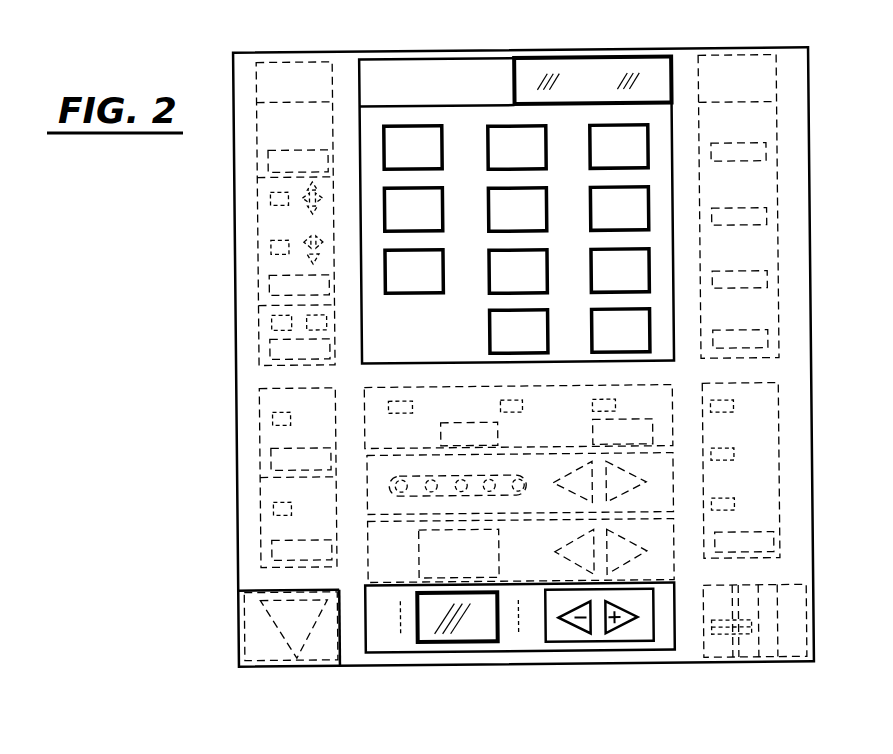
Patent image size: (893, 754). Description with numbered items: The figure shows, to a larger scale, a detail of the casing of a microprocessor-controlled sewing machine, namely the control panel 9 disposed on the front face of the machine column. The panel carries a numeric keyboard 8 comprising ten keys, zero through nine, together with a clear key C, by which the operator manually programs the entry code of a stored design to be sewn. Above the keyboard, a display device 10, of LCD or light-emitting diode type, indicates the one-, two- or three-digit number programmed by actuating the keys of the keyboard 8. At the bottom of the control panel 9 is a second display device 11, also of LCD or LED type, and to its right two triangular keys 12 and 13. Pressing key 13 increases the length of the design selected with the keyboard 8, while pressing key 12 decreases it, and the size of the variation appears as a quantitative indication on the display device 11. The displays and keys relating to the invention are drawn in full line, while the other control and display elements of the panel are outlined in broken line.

The numeric keyboard 8 is at (665, 129).
The control panel 9 is at (800, 300).
The display device 10 is at (599, 70).
The second display device 11 is at (465, 629).
The triangular key 12 is at (575, 631).
The triangular key 13 is at (622, 632).